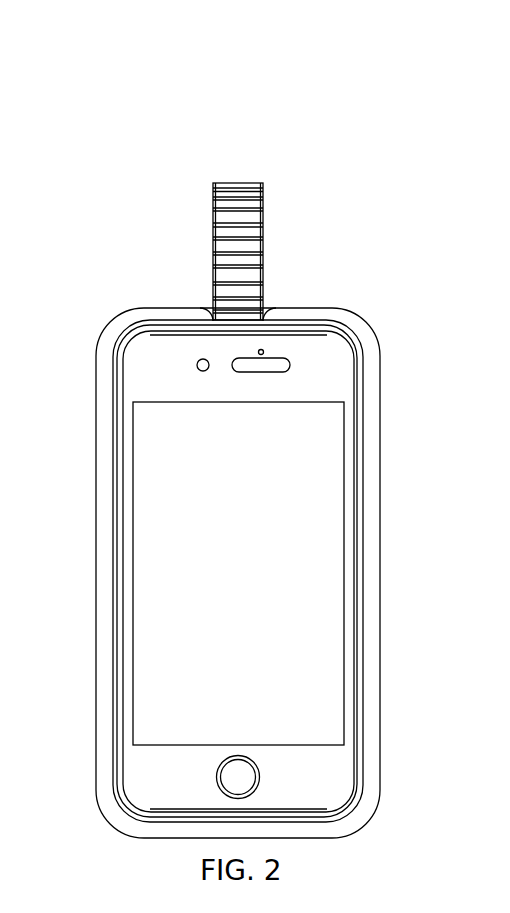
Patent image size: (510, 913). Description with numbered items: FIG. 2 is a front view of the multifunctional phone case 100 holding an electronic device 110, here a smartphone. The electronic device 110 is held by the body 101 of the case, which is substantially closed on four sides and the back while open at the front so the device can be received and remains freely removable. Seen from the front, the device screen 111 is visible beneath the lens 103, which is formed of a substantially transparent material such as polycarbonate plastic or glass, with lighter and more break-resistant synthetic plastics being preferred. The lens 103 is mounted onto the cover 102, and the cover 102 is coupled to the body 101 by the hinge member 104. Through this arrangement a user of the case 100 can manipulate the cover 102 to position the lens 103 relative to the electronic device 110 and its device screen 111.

The multifunctional phone case 100 is at (327, 133).
The body 101 is at (373, 660).
The cover 102 is at (353, 332).
The lens 103 is at (256, 580).
The hinge member 104 is at (227, 245).
The electronic device 110 is at (170, 366).
The device screen 111 is at (197, 573).